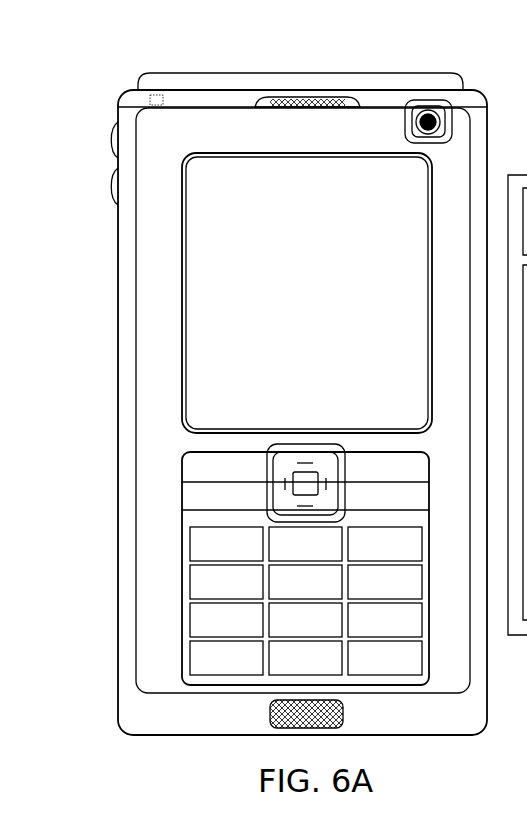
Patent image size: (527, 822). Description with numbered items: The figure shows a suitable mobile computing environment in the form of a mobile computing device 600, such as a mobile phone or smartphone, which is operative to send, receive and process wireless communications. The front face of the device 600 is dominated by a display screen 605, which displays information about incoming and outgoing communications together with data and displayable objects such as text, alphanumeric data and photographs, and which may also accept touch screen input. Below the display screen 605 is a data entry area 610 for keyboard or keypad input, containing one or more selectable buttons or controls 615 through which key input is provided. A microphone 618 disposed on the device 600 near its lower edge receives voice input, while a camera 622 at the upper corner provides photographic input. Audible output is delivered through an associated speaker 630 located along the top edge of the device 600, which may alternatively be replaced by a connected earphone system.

The mobile computing device 600 is at (112, 93).
The display screen 605 is at (212, 279).
The data entry area 610 is at (182, 490).
The selectable buttons or controls 615 is at (202, 582).
The microphone 618 is at (268, 716).
The camera 622 is at (432, 117).
The speaker 630 is at (310, 106).